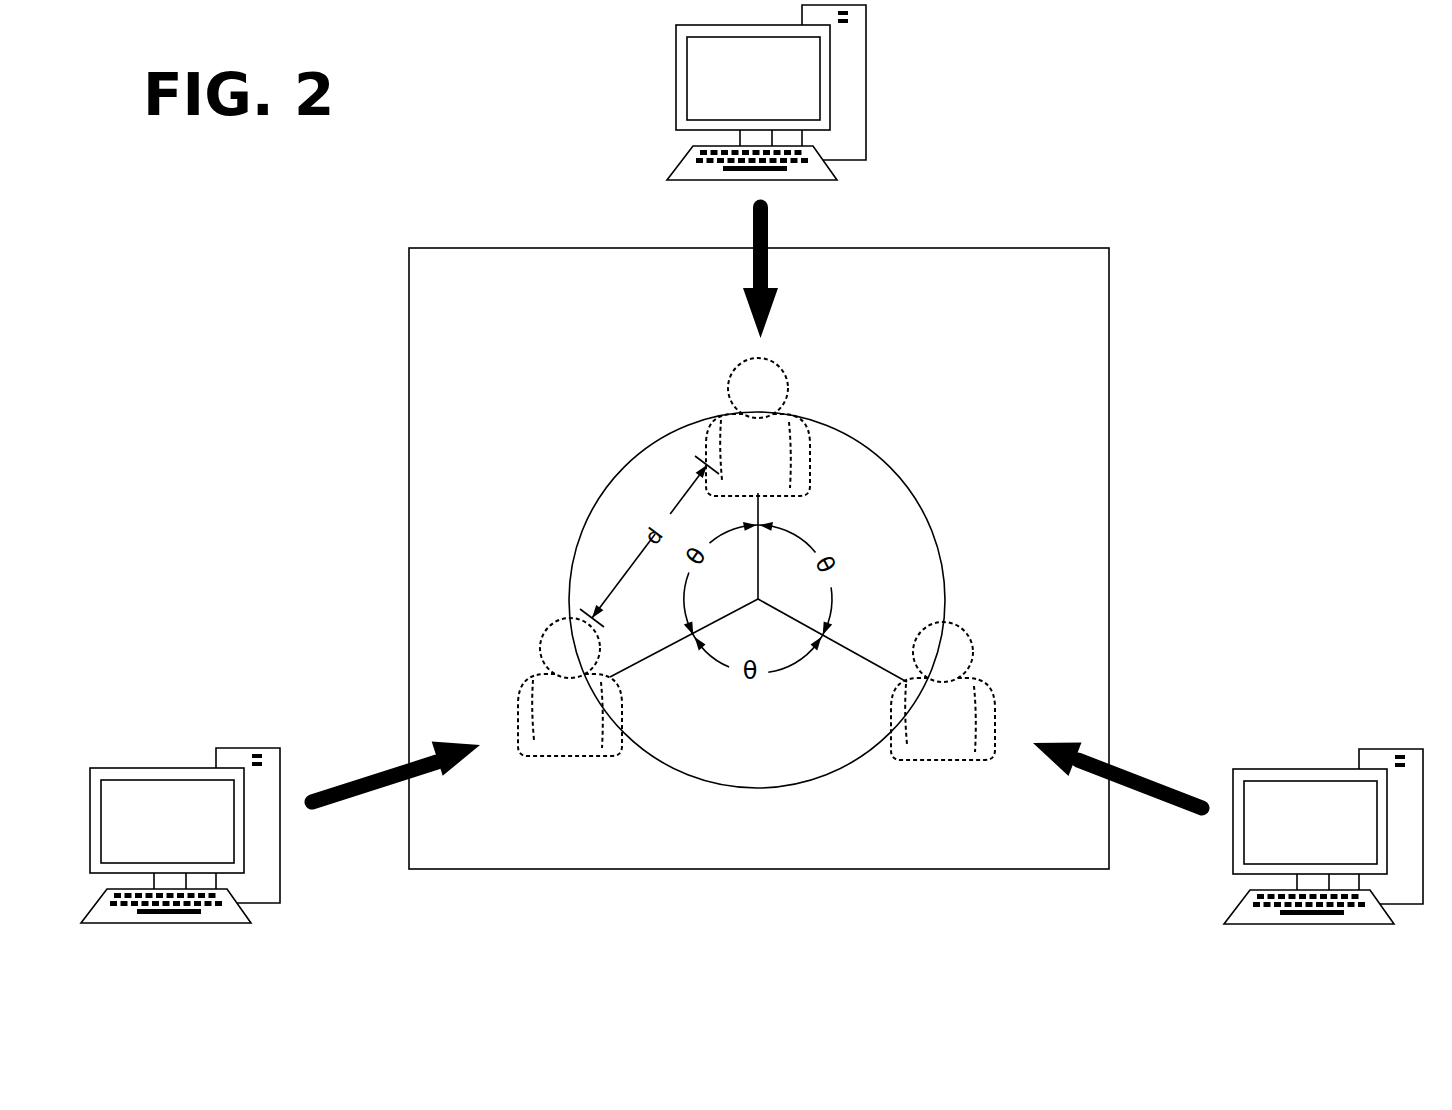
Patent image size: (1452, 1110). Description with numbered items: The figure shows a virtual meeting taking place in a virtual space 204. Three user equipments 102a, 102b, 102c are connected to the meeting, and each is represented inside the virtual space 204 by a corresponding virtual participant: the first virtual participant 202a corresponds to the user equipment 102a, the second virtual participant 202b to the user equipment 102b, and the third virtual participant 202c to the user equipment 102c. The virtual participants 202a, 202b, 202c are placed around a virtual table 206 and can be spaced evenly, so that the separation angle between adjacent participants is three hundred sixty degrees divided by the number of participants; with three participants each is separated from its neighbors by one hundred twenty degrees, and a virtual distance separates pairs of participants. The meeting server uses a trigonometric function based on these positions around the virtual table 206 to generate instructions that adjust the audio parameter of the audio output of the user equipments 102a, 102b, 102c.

The user equipment 102a is at (731, 89).
The user equipment 102b is at (1323, 836).
The user equipment 102c is at (180, 835).
The first virtual participant 202a is at (758, 427).
The second virtual participant 202b is at (943, 691).
The third virtual participant 202c is at (570, 687).
The virtual space 204 is at (1110, 300).
The virtual table 206 is at (905, 483).